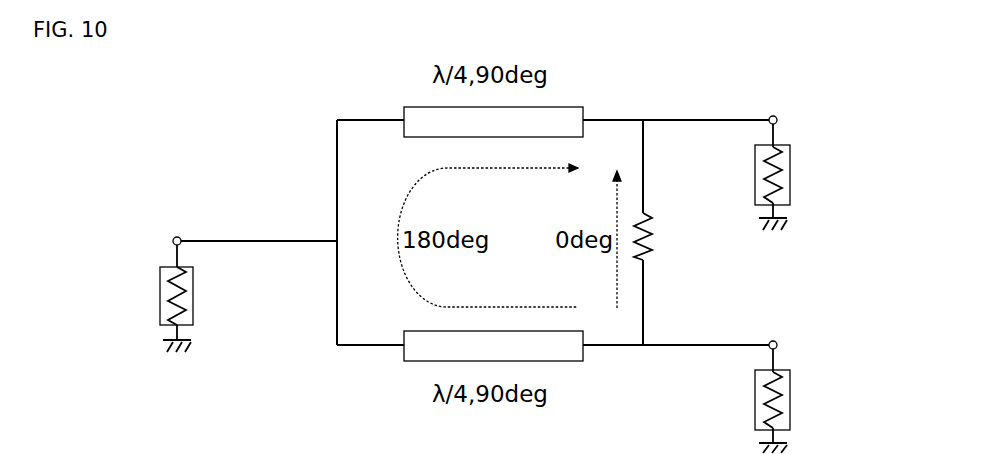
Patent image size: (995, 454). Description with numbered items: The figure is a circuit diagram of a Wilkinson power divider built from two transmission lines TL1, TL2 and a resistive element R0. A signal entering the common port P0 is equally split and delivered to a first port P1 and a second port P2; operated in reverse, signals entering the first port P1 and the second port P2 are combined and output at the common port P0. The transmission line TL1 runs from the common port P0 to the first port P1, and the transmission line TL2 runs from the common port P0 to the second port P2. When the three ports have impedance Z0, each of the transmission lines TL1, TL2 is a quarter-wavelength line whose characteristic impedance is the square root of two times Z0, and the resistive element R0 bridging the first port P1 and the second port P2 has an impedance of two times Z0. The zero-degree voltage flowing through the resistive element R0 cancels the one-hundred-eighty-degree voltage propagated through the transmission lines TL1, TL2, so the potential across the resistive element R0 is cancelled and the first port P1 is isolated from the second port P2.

The transmission line TL1 is at (558, 117).
The transmission line TL2 is at (425, 353).
The resistive element R0 is at (660, 232).
The common port P0 is at (147, 228).
The first port P1 is at (810, 107).
The second port P2 is at (810, 330).